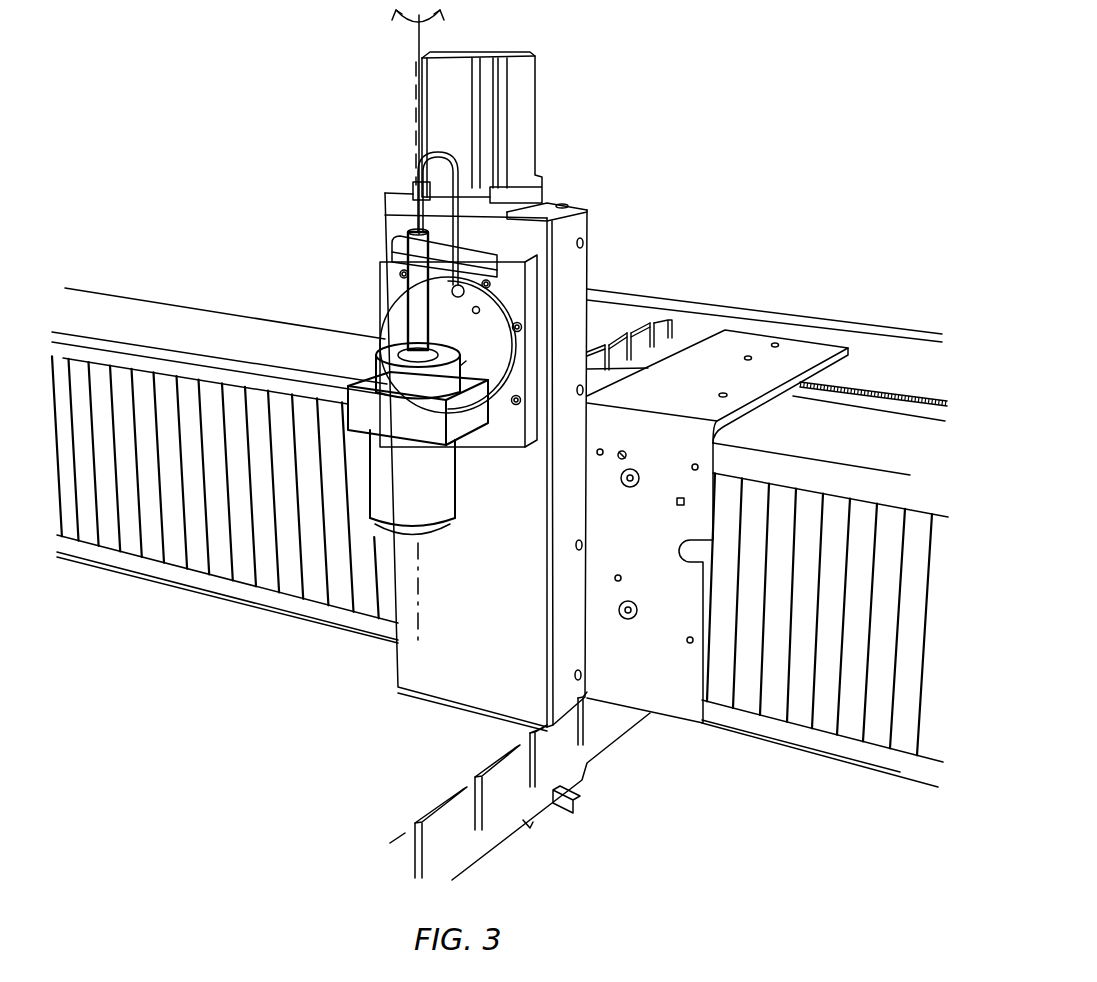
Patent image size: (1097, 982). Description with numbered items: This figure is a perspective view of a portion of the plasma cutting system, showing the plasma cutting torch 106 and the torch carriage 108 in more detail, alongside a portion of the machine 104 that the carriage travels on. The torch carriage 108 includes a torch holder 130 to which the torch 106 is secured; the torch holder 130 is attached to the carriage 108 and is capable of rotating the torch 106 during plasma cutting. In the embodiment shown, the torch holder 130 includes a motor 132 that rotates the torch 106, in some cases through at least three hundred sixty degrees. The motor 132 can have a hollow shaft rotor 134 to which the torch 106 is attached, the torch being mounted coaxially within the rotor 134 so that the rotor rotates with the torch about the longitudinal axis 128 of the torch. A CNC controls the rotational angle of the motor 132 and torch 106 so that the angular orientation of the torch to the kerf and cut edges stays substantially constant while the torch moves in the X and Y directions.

The rail 104 is at (170, 303).
The plasma cutting torch 106 is at (456, 495).
The torch carriage 108 is at (588, 283).
The longitudinal axis 128 is at (418, 615).
The torch holder 130 is at (364, 300).
The motor 132 is at (370, 372).
The hollow shaft rotor 134 is at (461, 364).